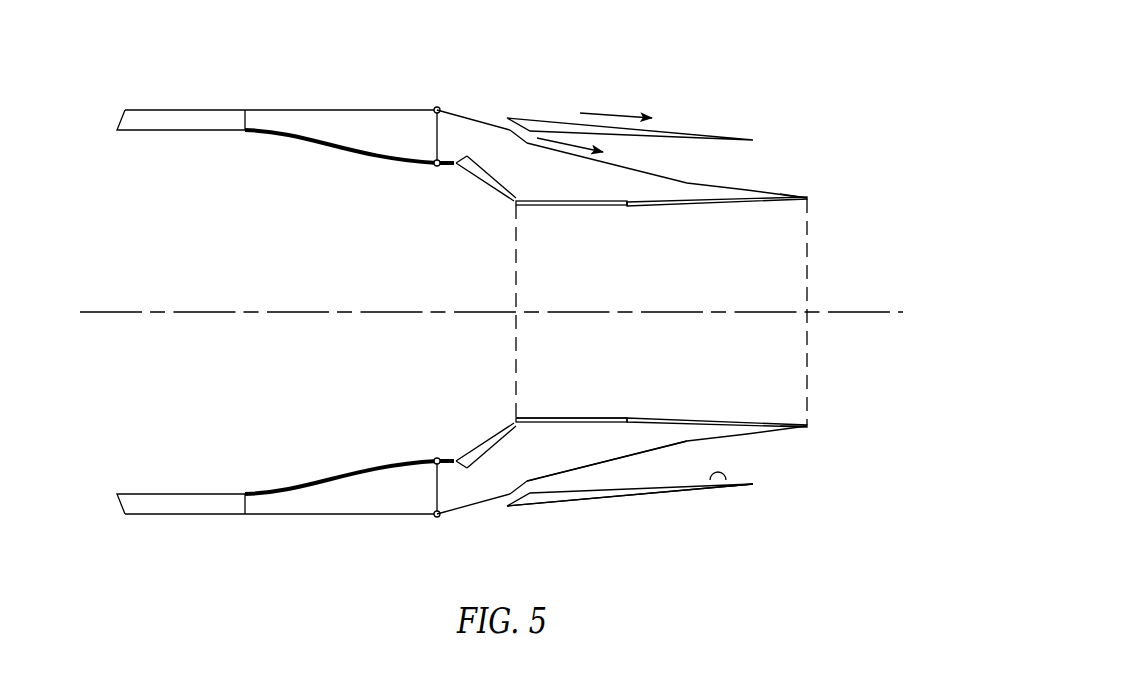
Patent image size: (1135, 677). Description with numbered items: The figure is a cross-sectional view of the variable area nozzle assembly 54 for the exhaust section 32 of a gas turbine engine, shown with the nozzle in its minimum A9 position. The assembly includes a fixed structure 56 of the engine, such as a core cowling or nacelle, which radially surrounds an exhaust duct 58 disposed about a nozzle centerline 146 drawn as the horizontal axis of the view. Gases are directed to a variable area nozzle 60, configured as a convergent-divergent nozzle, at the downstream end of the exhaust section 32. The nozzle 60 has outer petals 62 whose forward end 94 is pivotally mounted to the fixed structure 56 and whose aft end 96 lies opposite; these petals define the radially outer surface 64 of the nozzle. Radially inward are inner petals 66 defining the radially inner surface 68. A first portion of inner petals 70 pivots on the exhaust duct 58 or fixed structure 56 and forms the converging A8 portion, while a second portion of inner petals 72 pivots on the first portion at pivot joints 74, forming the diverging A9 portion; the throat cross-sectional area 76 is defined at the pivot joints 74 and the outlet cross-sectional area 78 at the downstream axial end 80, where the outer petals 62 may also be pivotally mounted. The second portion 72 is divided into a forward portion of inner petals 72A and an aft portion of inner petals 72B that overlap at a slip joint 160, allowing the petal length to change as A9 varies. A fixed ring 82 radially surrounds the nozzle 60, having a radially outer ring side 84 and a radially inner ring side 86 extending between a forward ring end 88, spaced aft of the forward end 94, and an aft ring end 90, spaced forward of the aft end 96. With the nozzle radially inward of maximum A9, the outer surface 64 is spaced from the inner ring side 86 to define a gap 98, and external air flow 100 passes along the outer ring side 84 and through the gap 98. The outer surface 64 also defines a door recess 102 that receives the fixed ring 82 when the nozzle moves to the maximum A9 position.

The exhaust section 32 is at (221, 535).
The variable area nozzle assembly 54 is at (869, 204).
The fixed structure 56 is at (333, 516).
The exhaust duct 58 is at (378, 462).
The variable area nozzle 60 is at (809, 487).
The outer petals 62 is at (762, 180).
The radially outer surface 64 is at (478, 119).
The inner petals 66 is at (582, 410).
The radially inner surface 68 is at (648, 418).
The first portion of inner petals 70 is at (478, 429).
The second portion of inner petals 72 is at (539, 413).
The forward portion of inner petals 72A is at (556, 211).
The aft portion of inner petals 72B is at (748, 212).
The pivot joints 74 is at (509, 208).
The throat cross-sectional area 76 is at (516, 262).
The outlet cross-sectional area 78 is at (807, 347).
The downstream axial end 80 is at (823, 425).
The fixed ring 82 is at (647, 508).
The radially outer ring side 84 is at (603, 503).
The radially inner ring side 86 is at (727, 483).
The forward ring end 88 is at (497, 512).
The aft ring end 90 is at (762, 480).
The forward end 94 is at (437, 104).
The aft end 96 is at (810, 188).
The gap 98 is at (701, 167).
The air flow 100 is at (606, 114).
The door recess 102 is at (646, 460).
The nozzle centerline 146 is at (888, 312).
The slip joint 160 is at (628, 211).